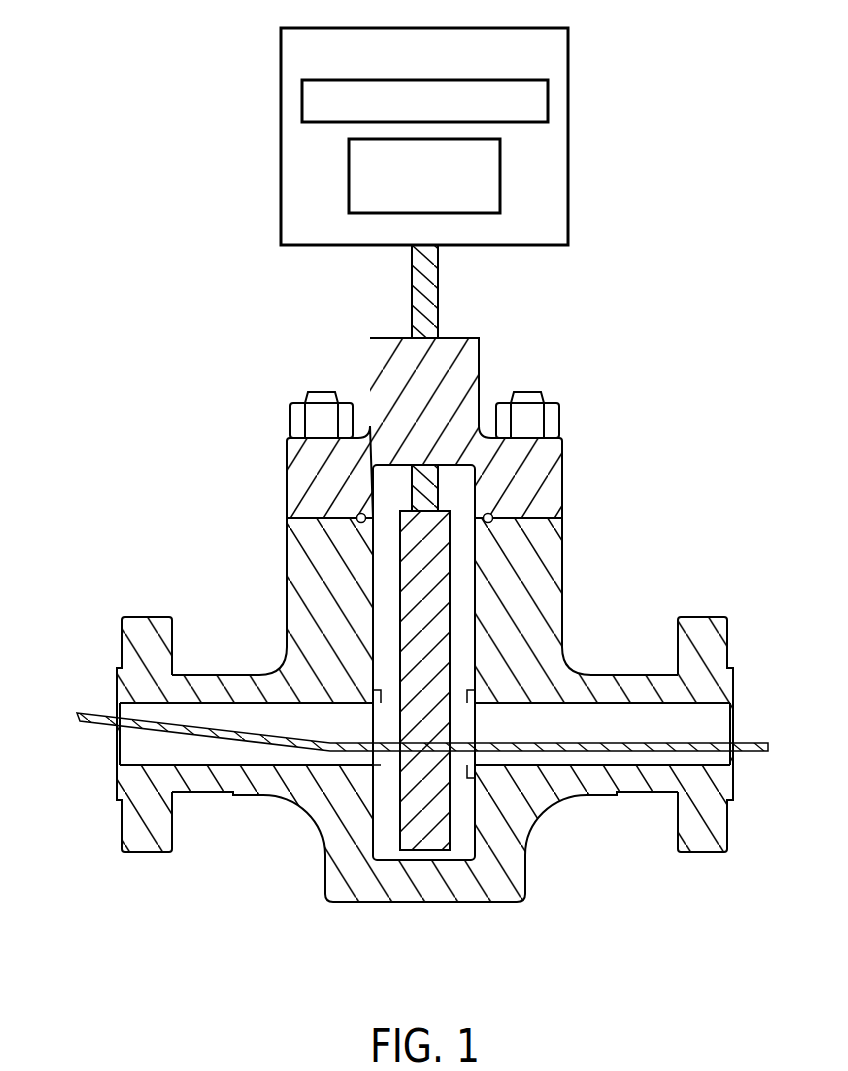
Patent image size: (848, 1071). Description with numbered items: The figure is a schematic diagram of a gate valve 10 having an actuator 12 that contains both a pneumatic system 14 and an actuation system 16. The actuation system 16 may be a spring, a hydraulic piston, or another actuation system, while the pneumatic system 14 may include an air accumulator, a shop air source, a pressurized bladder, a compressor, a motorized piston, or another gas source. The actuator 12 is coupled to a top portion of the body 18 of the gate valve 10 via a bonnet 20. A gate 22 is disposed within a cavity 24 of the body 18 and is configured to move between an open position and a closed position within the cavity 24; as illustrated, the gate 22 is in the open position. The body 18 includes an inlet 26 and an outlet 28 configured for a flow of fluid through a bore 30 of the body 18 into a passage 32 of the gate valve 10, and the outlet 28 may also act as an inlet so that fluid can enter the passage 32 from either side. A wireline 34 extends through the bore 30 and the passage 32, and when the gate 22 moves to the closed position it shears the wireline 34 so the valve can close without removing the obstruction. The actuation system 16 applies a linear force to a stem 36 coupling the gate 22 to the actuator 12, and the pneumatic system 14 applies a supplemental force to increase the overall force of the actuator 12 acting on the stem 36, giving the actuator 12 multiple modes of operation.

The gate valve 10 is at (409, 600).
The actuator 12 is at (452, 136).
The pneumatic system 14 is at (500, 178).
The actuation system 16 is at (548, 100).
The body 18 is at (404, 710).
The bonnet 20 is at (525, 447).
The gate 22 is at (458, 558).
The cavity 24 is at (455, 487).
The inlet 26 is at (115, 750).
The outlet 28 is at (733, 722).
The bore 30 is at (108, 740).
The passage 32 is at (262, 727).
The wireline 34 is at (745, 750).
The stem 36 is at (438, 295).